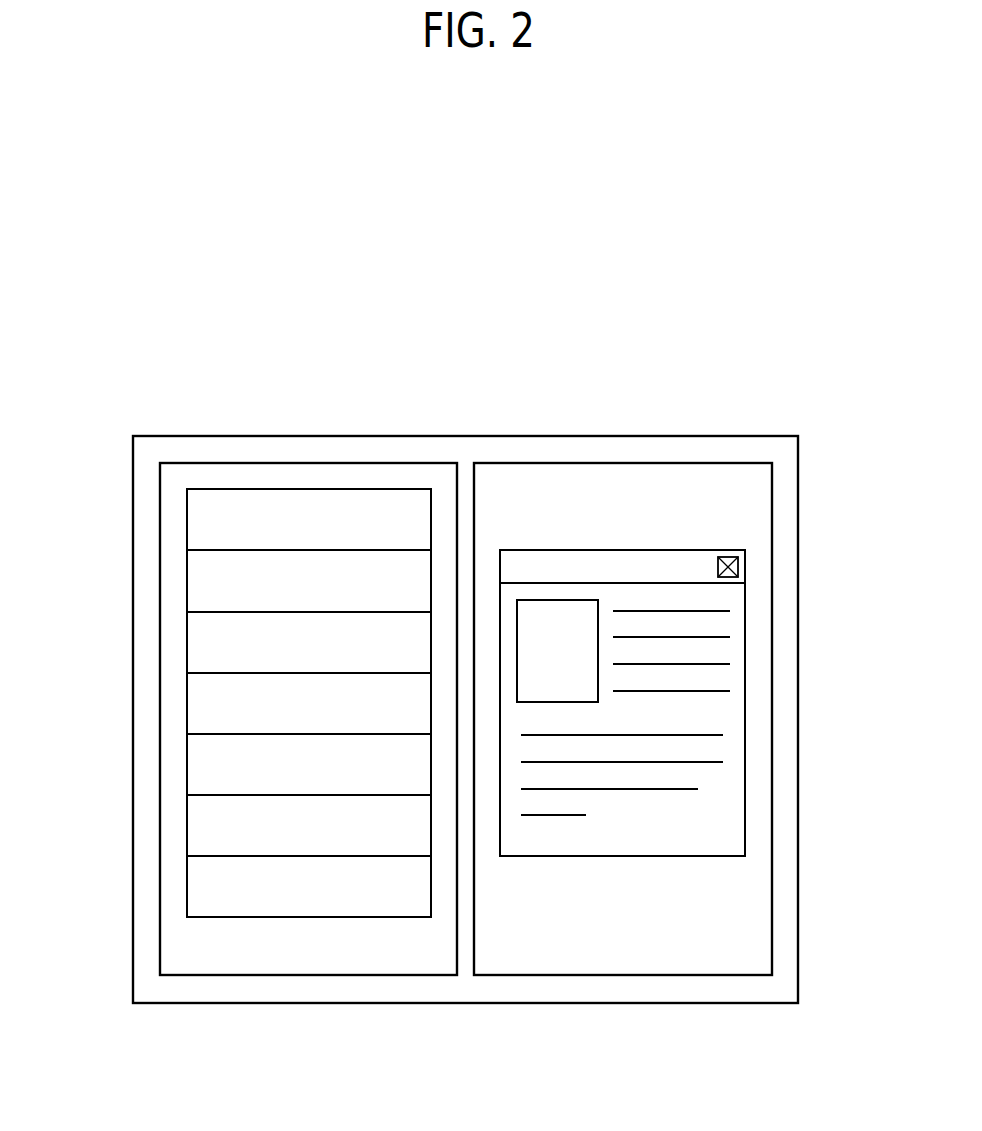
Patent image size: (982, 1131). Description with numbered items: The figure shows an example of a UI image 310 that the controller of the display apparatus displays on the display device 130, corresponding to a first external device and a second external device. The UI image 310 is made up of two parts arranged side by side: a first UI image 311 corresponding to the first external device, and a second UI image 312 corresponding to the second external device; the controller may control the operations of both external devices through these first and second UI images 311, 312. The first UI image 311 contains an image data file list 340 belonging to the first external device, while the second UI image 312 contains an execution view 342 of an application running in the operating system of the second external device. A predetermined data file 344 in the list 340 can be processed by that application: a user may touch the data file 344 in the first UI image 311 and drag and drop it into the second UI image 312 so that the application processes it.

The display device 130 is at (463, 435).
The UI image 310 is at (733, 395).
The first UI image 311 is at (298, 960).
The second UI image 312 is at (622, 960).
The image data file list 340 is at (202, 521).
The execution view 342 is at (728, 821).
The data file 344 is at (202, 587).